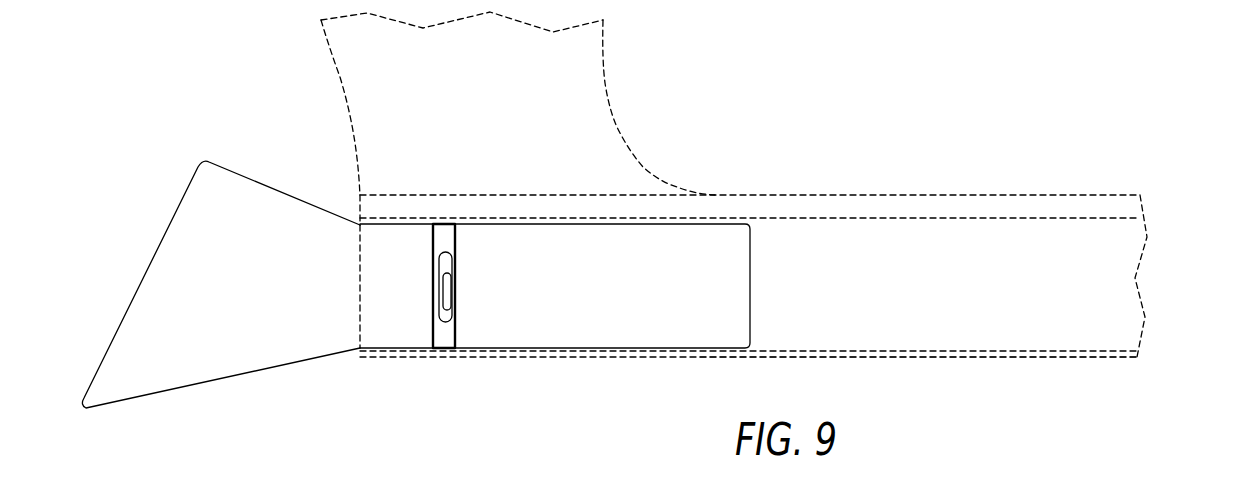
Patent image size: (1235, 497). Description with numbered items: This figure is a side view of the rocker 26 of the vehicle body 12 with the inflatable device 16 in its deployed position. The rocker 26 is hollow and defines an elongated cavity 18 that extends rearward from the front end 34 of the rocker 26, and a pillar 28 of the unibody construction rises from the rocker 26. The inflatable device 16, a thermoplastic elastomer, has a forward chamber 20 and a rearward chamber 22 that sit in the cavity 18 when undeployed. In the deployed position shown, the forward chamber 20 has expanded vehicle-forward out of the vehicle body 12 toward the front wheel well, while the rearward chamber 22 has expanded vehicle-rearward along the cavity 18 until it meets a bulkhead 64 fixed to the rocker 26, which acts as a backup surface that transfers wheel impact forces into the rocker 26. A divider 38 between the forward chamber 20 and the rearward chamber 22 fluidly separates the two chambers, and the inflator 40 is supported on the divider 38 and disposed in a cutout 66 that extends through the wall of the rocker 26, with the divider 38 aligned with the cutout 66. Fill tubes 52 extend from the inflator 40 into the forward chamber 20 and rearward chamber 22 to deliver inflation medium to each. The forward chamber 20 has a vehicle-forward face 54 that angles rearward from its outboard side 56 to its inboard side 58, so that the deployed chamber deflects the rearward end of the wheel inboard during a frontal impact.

The vehicle body 12 is at (988, 367).
The inflatable device 16 is at (303, 373).
The cavity 18 is at (1049, 318).
The forward chamber 20 is at (118, 345).
The rearward chamber 22 is at (740, 327).
The rocker 26 is at (916, 193).
The pillar 28 is at (623, 128).
The front end 34 is at (360, 365).
The divider 38 is at (450, 222).
The inflator 40 is at (452, 283).
The fill tube 52 is at (440, 222).
The vehicle-forward face 54 is at (153, 240).
The outboard side 56 is at (220, 383).
The inboard side 58 is at (265, 182).
The bulkhead 64 is at (753, 258).
The cutout 66 is at (449, 252).